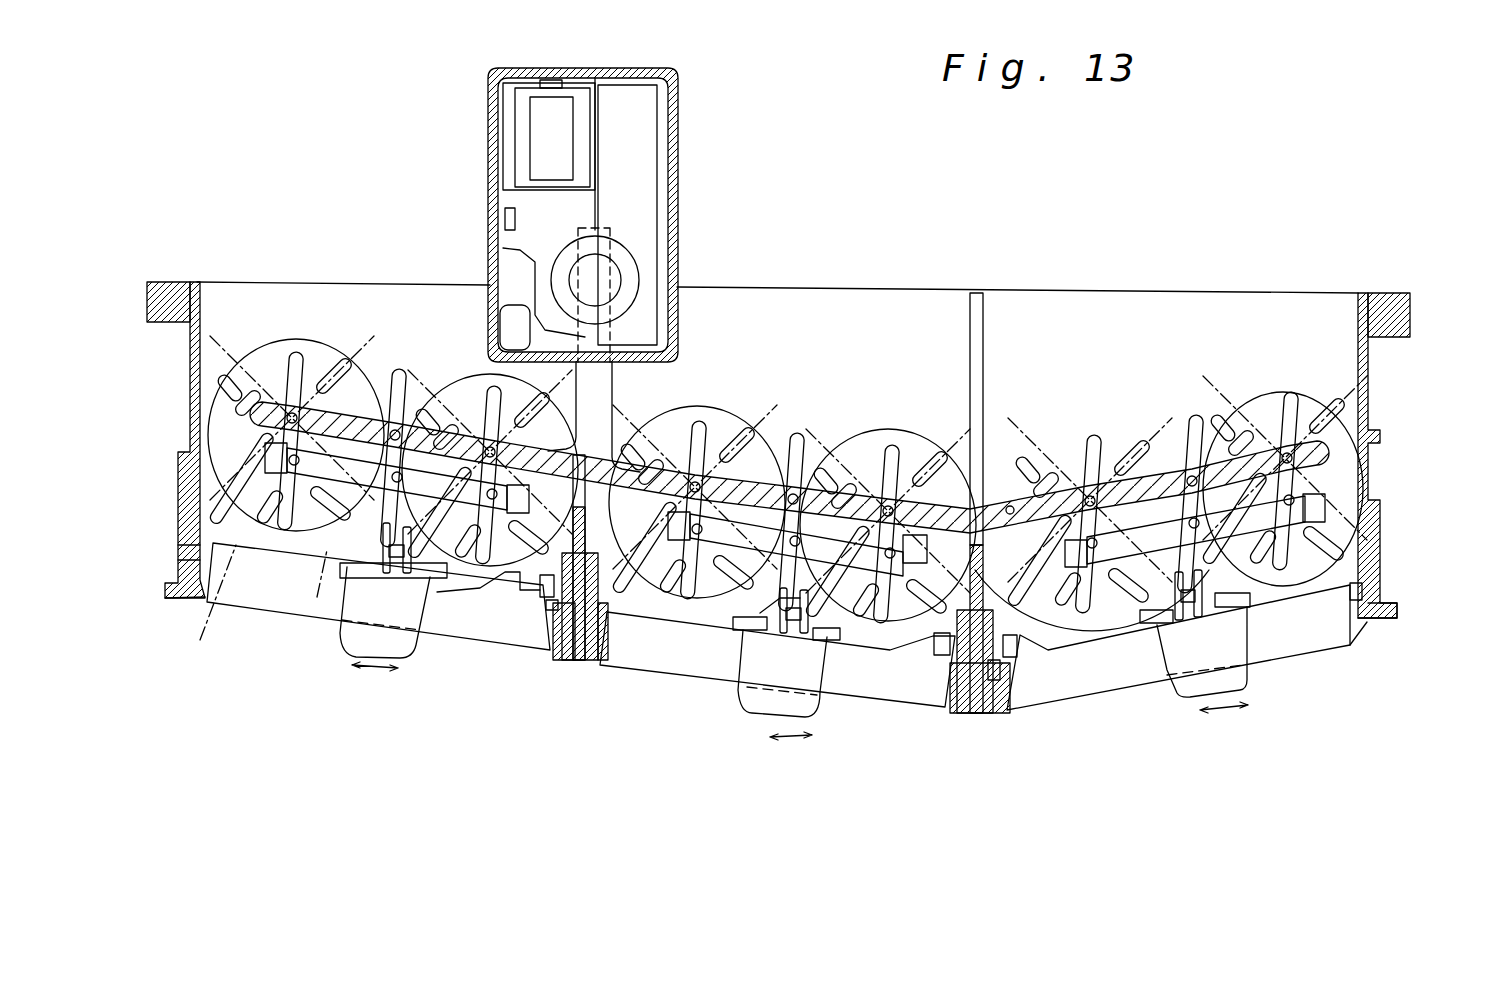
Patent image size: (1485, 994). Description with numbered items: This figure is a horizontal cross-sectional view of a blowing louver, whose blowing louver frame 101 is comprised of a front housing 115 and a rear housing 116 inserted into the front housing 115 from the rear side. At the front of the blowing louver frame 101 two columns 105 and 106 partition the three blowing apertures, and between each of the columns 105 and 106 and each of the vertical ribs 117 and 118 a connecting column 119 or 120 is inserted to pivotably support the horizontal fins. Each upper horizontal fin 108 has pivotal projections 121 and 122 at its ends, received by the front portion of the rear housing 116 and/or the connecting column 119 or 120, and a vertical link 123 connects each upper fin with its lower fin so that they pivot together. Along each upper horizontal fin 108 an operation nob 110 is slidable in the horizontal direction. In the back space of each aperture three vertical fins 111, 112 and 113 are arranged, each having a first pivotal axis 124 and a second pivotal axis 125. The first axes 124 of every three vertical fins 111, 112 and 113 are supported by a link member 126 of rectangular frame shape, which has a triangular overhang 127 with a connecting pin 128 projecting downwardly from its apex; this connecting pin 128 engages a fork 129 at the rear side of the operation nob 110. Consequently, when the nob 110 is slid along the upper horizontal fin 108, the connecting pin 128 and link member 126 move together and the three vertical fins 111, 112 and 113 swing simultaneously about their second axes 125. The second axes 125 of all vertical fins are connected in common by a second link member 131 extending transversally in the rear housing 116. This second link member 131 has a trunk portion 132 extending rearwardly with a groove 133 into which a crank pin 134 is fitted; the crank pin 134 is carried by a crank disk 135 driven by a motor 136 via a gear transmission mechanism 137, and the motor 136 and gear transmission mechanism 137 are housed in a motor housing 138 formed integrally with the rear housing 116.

The blowing louver frame 101 is at (1334, 656).
The column 105 is at (582, 662).
The column 106 is at (980, 713).
The upper horizontal fin 108 is at (267, 615).
The operation nob 110 is at (398, 660).
The vertical fin 111 is at (1078, 445).
The vertical fin 112 is at (387, 362).
The vertical fin 113 is at (488, 378).
The front housing 115 is at (183, 490).
The rear housing 116 is at (190, 382).
The vertical rib 117 is at (470, 605).
The vertical rib 118 is at (972, 322).
The connecting column 119 is at (565, 662).
The connecting column 120 is at (950, 713).
The pivotal projection 121 is at (183, 554).
The pivotal projection 122 is at (540, 648).
The vertical link 123 is at (540, 600).
The first pivotal axis 124 is at (683, 493).
The second pivotal axis 125 is at (262, 405).
The link member 126 is at (268, 452).
The triangular overhang 127 is at (320, 588).
The connecting pin 128 is at (453, 395).
The fork 129 is at (780, 598).
The second link member 131 is at (1010, 490).
The trunk portion 132 is at (620, 388).
The groove 133 is at (610, 258).
The crank pin 134 is at (597, 300).
The crank disk 135 is at (633, 258).
The motor 136 is at (545, 117).
The gear transmission mechanism 137 is at (647, 203).
The motor housing 138 is at (630, 73).